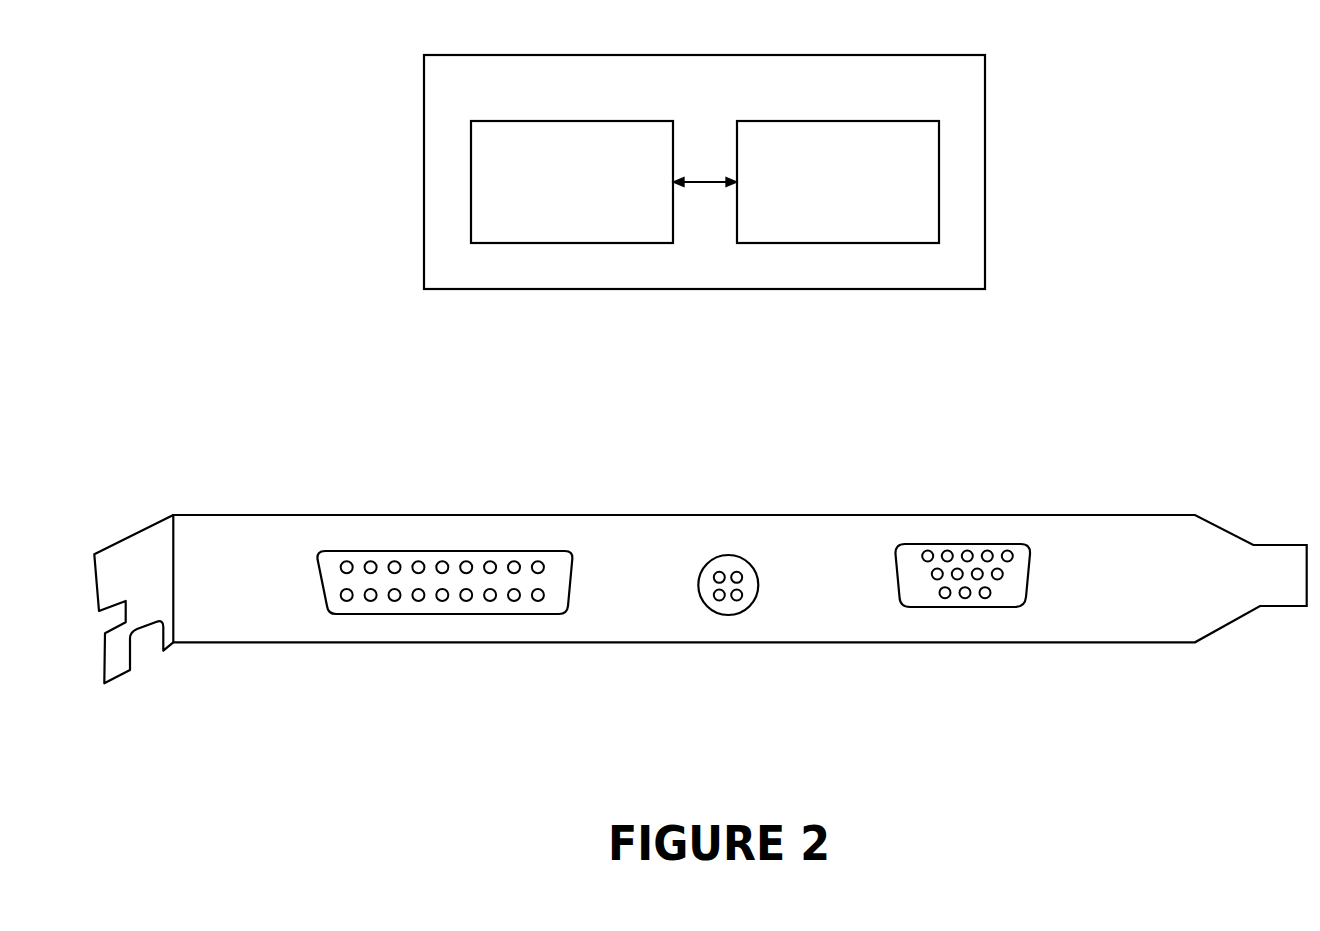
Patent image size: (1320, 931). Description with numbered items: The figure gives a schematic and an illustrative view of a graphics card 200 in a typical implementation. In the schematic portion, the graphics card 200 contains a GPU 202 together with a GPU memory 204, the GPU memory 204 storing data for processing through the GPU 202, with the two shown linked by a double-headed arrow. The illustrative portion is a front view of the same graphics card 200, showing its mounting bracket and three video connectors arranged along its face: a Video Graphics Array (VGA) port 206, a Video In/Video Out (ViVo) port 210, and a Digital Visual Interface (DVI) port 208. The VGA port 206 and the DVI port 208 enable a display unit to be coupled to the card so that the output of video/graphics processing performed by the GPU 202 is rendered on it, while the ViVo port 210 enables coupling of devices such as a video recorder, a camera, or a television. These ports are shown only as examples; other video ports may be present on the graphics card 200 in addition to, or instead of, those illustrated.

The graphics card 200 is at (1102, 515).
The GPU 202 is at (553, 204).
The GPU memory 204 is at (821, 204).
The Video Graphics Array (VGA) port 206 is at (318, 597).
The Digital Visual Interface (DVI) port 208 is at (953, 600).
The Video In/Video Out (ViVo) port 210 is at (730, 563).